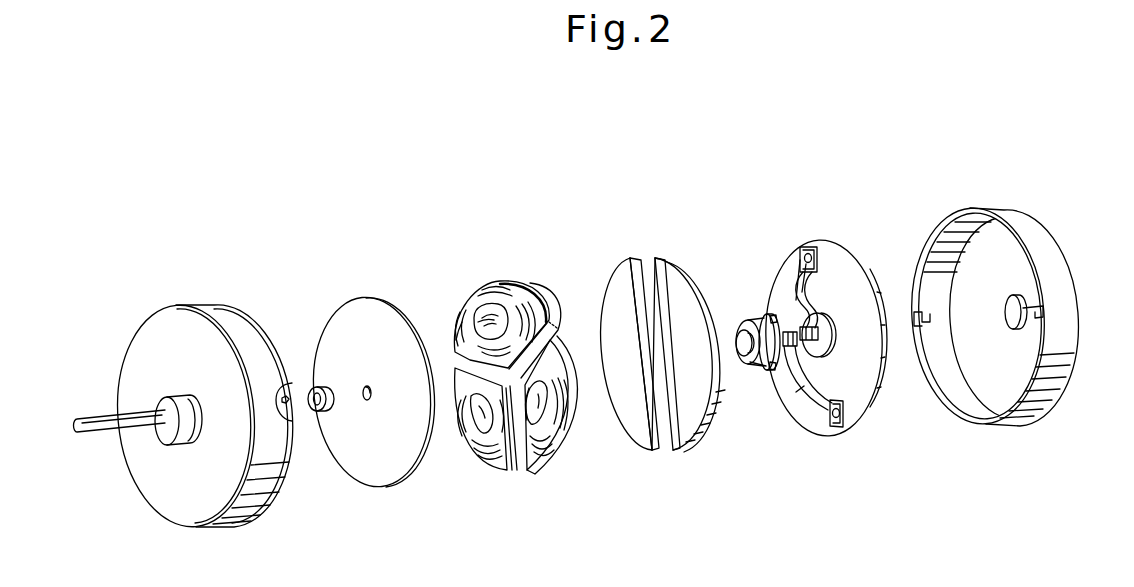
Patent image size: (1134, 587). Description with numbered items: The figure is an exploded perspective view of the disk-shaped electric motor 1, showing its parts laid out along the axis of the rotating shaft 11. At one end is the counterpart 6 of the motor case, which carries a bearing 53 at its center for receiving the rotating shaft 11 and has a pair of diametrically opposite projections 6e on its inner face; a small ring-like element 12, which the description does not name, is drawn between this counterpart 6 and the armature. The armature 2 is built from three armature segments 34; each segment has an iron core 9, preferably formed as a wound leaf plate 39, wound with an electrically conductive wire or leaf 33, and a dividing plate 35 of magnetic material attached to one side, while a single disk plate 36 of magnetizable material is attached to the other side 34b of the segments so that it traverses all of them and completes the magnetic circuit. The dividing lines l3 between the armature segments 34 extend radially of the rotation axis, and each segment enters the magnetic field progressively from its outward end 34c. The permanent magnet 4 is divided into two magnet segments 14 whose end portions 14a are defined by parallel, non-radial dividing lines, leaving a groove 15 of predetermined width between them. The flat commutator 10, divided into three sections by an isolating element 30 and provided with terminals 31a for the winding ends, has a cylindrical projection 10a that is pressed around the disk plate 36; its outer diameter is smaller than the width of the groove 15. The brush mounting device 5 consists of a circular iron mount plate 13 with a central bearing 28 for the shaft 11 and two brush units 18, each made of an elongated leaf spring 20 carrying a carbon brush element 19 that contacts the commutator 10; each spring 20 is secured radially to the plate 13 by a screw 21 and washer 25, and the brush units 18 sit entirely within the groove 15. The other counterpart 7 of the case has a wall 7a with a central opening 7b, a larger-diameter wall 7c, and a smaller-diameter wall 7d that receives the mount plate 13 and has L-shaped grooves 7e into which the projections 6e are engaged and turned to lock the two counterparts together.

The electric motor 1 is at (412, 252).
The armature 2 is at (460, 276).
The permanent magnet 4 is at (648, 256).
The brush mounting device 5 is at (792, 266).
The counterpart of motor case 6 is at (200, 306).
The projections 6e is at (292, 406).
The counterpart of motor case 7 is at (1002, 206).
The wall 7a is at (990, 366).
The opening 7b is at (1008, 316).
The wall of larger diameter 7c is at (1044, 313).
The wall of smaller diameter 7d is at (966, 212).
The L-shaped grooves 7e is at (918, 322).
The iron core 9 is at (468, 316).
The commutator 10 is at (751, 351).
The cylindrical projection 10a is at (756, 330).
The rotating shaft 11 is at (78, 421).
The bearing ring 12 is at (312, 391).
The mount plate 13 is at (815, 240).
The permanent magnet segments 14 is at (630, 262).
The end portions 14a is at (668, 422).
The groove 15 is at (660, 446).
The brush units 18 is at (796, 400).
The carbon brush element 19 is at (800, 328).
The leaf spring 20 is at (800, 292).
The screw 21 is at (806, 247).
The washer 25 is at (814, 260).
The bearing 28 is at (882, 376).
The isolating element 30 is at (756, 368).
The terminals 31a is at (771, 318).
The electrically conductive wire or leaf 33 is at (456, 342).
The armature segments 34 is at (486, 282).
The other side of armature segments 34b is at (516, 298).
The outward end 34c is at (556, 334).
The dividing plate 35 is at (526, 287).
The disk plate 36 is at (360, 300).
The wound leaf plate 39 is at (482, 326).
The bearing 53 is at (160, 412).
The dividing lines of armature segments l3 is at (573, 313).